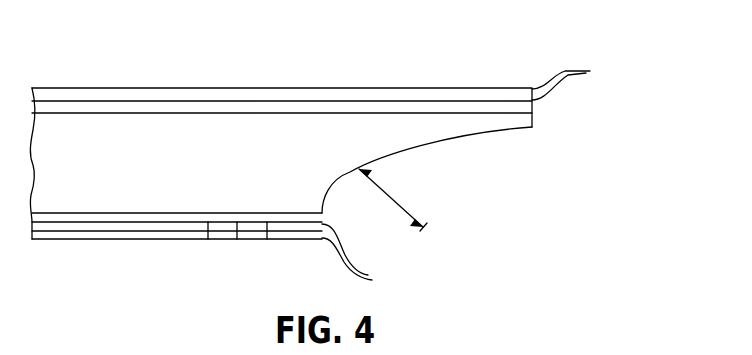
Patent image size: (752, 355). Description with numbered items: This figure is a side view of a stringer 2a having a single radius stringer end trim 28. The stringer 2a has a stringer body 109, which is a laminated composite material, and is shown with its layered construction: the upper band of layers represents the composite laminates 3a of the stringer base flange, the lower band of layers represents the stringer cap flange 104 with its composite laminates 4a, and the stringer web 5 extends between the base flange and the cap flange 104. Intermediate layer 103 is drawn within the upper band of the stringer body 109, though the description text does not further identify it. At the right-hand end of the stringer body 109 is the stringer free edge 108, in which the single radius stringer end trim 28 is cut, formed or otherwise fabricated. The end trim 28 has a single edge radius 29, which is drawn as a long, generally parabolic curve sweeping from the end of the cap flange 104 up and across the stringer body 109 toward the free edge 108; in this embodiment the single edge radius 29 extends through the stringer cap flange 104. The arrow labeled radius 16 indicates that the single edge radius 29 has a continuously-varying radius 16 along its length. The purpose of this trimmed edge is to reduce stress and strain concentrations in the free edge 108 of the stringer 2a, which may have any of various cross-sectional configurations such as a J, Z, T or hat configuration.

The stringer with a single radius stringer end trim 2a is at (142, 72).
The composite laminates 3a is at (575, 81).
The stringer body 109 is at (222, 78).
The intermediate layer 103 is at (231, 102).
The stringer cap flange 104 is at (148, 213).
The stringer free edge 108 is at (518, 122).
The single edge radius 29 is at (422, 143).
The single radius stringer end trim 28 is at (414, 184).
The continuously-varying radius 16 is at (397, 207).
The stringer web 5 is at (317, 180).
The composite laminates 4a is at (360, 257).